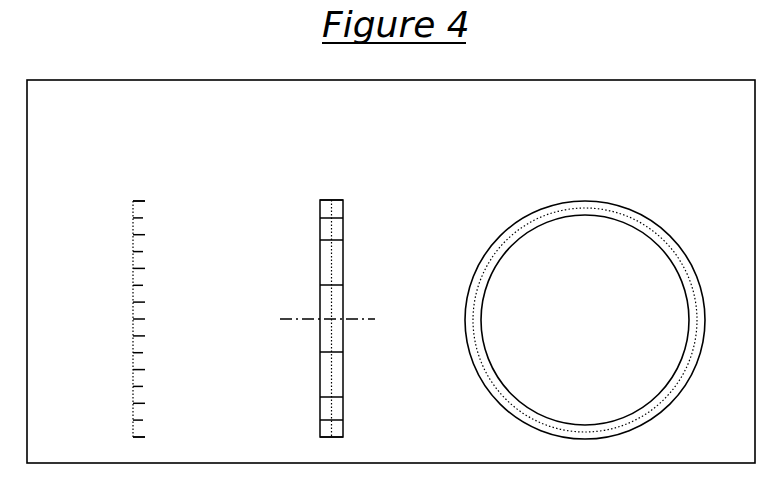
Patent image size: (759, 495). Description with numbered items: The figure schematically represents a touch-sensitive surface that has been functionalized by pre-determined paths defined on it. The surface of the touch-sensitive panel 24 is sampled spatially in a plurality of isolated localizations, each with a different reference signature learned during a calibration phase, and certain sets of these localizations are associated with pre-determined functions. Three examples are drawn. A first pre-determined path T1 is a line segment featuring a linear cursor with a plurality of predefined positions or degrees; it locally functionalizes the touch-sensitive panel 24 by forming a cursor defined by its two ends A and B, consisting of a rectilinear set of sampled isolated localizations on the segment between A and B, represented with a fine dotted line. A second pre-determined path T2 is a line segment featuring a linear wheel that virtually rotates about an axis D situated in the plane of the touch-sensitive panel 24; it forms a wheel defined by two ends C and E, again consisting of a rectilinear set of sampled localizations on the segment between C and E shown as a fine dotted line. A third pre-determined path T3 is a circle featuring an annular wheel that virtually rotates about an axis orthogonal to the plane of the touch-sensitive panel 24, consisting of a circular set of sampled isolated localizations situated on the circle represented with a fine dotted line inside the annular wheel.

The touch-sensitive panel 24 is at (540, 97).
The first pre-determined path T1 is at (135, 182).
The second pre-determined path T2 is at (333, 182).
The third pre-determined path T3 is at (588, 182).
The end of the cursor A is at (132, 203).
The end of the cursor B is at (133, 437).
The end of the wheel C is at (319, 202).
The axis D is at (309, 317).
The end of the wheel E is at (320, 437).